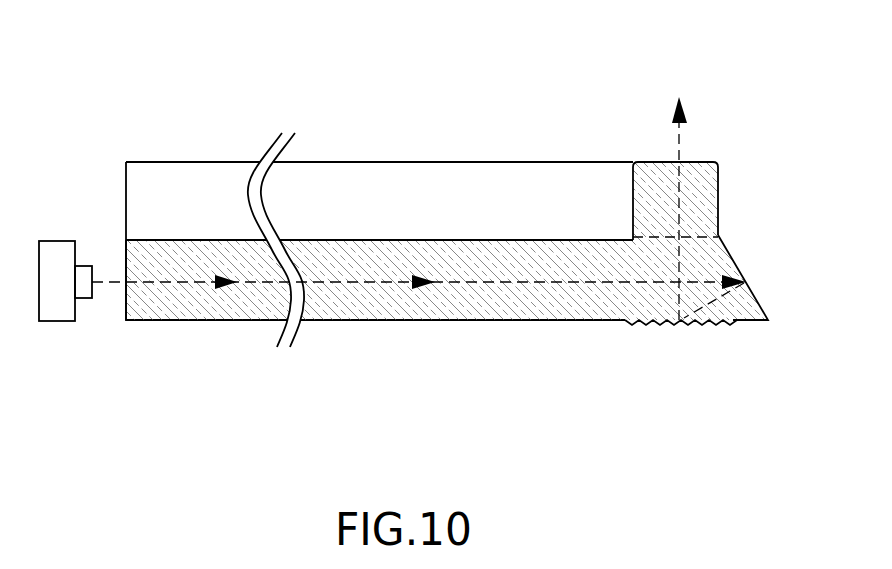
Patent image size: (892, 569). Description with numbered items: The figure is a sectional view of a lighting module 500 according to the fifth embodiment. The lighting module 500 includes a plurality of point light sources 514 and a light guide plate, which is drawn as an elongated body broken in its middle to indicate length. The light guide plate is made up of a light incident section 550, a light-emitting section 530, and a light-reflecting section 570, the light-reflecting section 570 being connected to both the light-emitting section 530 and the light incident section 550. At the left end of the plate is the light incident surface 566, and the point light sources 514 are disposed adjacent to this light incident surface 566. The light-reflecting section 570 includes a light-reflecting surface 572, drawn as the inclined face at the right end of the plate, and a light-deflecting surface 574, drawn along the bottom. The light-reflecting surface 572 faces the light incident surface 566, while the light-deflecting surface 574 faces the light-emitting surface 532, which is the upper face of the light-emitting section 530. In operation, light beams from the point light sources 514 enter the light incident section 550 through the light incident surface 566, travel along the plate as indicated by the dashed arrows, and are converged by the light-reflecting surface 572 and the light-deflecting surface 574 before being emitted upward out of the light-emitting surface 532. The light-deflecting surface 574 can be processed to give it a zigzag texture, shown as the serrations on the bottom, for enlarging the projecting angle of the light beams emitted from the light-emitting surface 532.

The lighting module 500 is at (385, 50).
The point light sources 514 is at (53, 258).
The light-emitting section 530 is at (680, 204).
The light-emitting surface 532 is at (657, 162).
The light incident section 550 is at (375, 287).
The light incident surface 566 is at (124, 305).
The light-reflecting section 570 is at (658, 262).
The light-reflecting surface 572 is at (733, 259).
The light-deflecting surface 574 is at (652, 327).